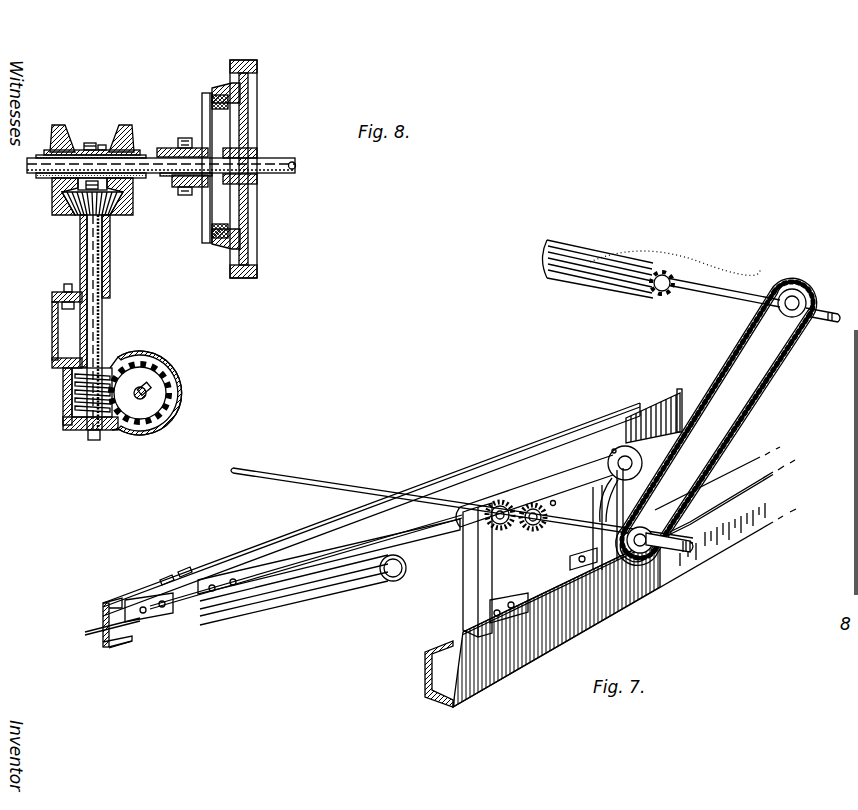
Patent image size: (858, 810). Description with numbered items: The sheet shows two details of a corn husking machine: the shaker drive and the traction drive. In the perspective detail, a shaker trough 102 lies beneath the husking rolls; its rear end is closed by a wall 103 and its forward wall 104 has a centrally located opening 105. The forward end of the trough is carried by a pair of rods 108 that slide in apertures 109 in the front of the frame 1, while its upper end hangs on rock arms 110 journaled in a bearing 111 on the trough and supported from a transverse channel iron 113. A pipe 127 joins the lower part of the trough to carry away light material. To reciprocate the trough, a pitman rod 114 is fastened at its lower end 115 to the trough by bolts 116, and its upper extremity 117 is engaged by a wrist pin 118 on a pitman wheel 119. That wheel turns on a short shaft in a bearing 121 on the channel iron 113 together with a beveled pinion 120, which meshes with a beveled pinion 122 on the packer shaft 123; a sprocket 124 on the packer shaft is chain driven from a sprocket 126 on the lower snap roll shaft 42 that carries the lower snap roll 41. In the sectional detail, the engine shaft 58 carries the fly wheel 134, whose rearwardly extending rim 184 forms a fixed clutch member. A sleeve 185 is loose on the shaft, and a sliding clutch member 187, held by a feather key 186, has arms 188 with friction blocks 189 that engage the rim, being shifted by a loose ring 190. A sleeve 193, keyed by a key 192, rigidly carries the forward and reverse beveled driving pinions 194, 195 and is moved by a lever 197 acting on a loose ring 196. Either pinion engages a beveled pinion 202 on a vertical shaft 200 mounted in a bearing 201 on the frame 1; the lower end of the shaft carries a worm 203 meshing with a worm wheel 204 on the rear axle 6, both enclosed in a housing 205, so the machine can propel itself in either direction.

In FIG. 8, the engine shaft 58 is at (293, 162).
In FIG. 8, the key 192 is at (46, 148).
In FIG. 8, the sleeve 193 is at (56, 204).
In FIG. 8, the forward beveled driving pinion 194 is at (125, 124).
In FIG. 8, the reverse beveled driving pinion 195 is at (58, 124).
In FIG. 8, the loose ring 196 is at (88, 142).
In FIG. 8, the lever 197 is at (102, 144).
In FIG. 8, the feather key 186 is at (160, 148).
In FIG. 8, the sleeve 185 is at (172, 182).
In FIG. 8, the sliding clutch member 187 is at (193, 196).
In FIG. 8, the loose ring 190 is at (178, 200).
In FIG. 8, the rim 184 is at (226, 90).
In FIG. 8, the friction blocks 189 is at (230, 102).
In FIG. 8, the arms 188 is at (212, 125).
In FIG. 8, the fly wheel 134 is at (258, 70).
In FIG. 8, the bearing 201 is at (80, 262).
In FIG. 8, the vertical shaft 200 is at (103, 266).
In FIG. 8, the beveled pinion 202 is at (85, 196).
In FIG. 8, the frame 1 is at (52, 337).
In FIG. 7, the frame 1 is at (138, 637).
In FIG. 8, the worm 203 is at (70, 397).
In FIG. 8, the worm wheel 204 is at (148, 378).
In FIG. 8, the housing 205 is at (182, 397).
In FIG. 8, the rear axle 6 is at (150, 402).
In FIG. 7, the lower snap roll 41 is at (616, 263).
In FIG. 7, the lower snap roll shaft 42 is at (712, 286).
In FIG. 7, the sprocket 126 is at (800, 296).
In FIG. 7, the pitman wheel 119 is at (628, 425).
In FIG. 7, the wall 103 is at (656, 418).
In FIG. 7, the bearing 111 is at (676, 422).
In FIG. 7, the wrist pin 118 is at (619, 447).
In FIG. 7, the bearing 121 is at (537, 503).
In FIG. 7, the upper extremity of pitman rod 117 is at (570, 490).
In FIG. 7, the beveled pinion 120 is at (503, 500).
In FIG. 7, the shaker trough 102 is at (460, 470).
In FIG. 7, the rock arms 110 is at (772, 453).
In FIG. 7, the packer shaft 123 is at (330, 462).
In FIG. 7, the pitman rod 114 is at (414, 527).
In FIG. 7, the forward wall 104 is at (185, 568).
In FIG. 7, the opening 105 is at (166, 578).
In FIG. 7, the beveled pinion 122 is at (505, 530).
In FIG. 7, the bolts 116 is at (213, 592).
In FIG. 7, the lower end of pitman rod 115 is at (246, 586).
In FIG. 7, the pipe 127 is at (335, 592).
In FIG. 7, the rods 108 is at (92, 632).
In FIG. 7, the apertures 109 is at (122, 642).
In FIG. 7, the sprocket 124 is at (648, 555).
In FIG. 7, the transverse channel iron 113 is at (462, 700).